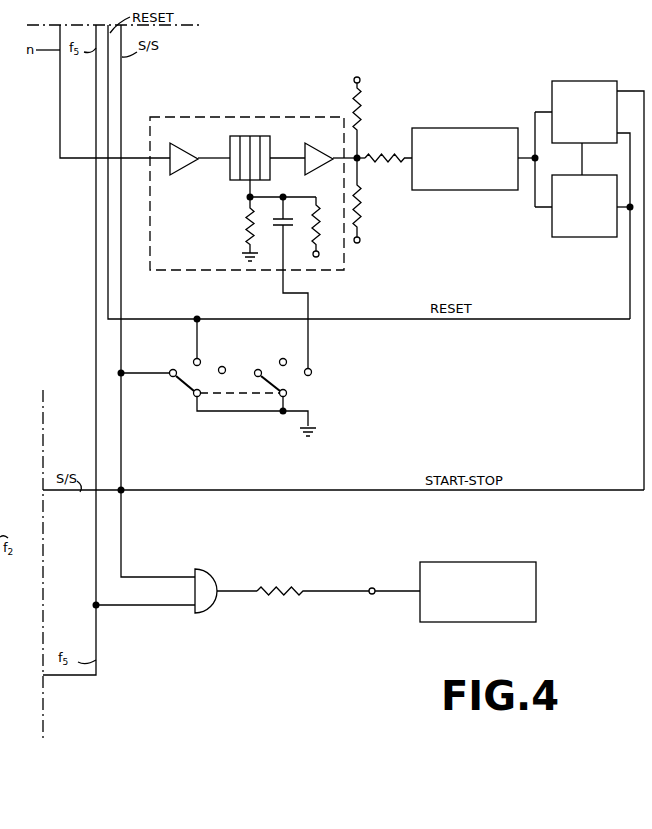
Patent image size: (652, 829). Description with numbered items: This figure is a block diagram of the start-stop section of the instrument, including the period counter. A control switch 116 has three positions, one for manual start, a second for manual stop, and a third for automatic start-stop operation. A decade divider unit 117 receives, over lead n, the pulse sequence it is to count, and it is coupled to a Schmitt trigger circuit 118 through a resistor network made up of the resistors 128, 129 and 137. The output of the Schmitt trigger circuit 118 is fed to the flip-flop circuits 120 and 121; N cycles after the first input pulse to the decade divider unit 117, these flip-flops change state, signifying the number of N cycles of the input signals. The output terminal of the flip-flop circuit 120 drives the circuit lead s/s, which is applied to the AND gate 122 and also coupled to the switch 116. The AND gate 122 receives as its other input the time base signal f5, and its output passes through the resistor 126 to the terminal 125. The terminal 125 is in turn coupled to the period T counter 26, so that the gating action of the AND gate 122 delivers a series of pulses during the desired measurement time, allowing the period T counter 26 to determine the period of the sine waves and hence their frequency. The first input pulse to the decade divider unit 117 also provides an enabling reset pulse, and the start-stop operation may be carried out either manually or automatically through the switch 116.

The period T counter 26 is at (497, 562).
The control switch 116 is at (352, 390).
The decade divider unit 117 is at (262, 117).
The Schmitt trigger circuit 118 is at (505, 128).
The flip-flop circuit 120 is at (572, 81).
The flip-flop circuit 121 is at (562, 238).
The AND gate 122 is at (213, 580).
The terminal 125 is at (385, 575).
The resistor 126 is at (286, 598).
The resistor 128 is at (362, 101).
The resistor 129 is at (383, 150).
The resistor 137 is at (362, 215).